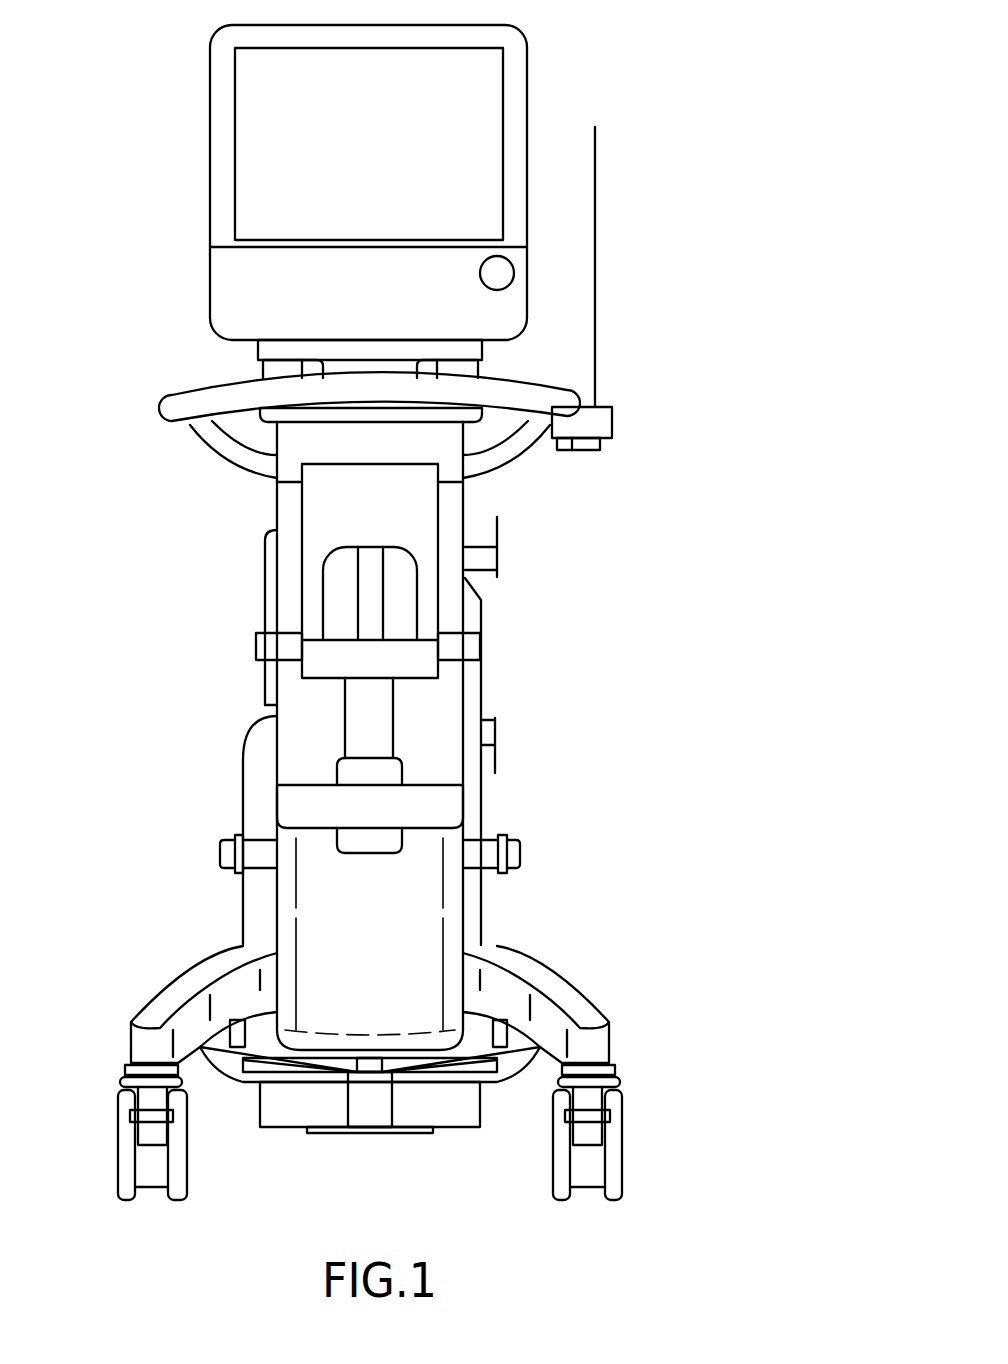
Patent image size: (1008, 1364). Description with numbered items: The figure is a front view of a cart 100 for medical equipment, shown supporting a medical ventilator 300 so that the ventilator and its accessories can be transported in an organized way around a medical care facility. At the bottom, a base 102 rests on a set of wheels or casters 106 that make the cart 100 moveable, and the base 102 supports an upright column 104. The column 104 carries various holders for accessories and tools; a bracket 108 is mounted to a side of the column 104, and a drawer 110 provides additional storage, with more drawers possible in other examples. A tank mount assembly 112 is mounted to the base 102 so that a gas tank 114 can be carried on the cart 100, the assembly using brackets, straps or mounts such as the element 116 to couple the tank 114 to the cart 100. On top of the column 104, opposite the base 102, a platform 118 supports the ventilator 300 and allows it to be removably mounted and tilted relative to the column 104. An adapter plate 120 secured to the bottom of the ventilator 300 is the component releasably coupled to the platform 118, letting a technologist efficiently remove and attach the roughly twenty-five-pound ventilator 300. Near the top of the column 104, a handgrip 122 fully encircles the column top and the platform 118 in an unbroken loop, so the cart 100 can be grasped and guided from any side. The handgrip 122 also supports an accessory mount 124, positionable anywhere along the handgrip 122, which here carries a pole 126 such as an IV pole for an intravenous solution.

The cart 100 is at (652, 637).
The base 102 is at (160, 1004).
The column 104 is at (310, 700).
The wheels or casters 106 is at (128, 1137).
The bracket 108 is at (485, 680).
The drawer 110 is at (393, 909).
The tank mount assembly 112 is at (267, 1075).
The gas tank 114 is at (260, 780).
The bracket, strap or mount 116 is at (263, 858).
The platform 118 is at (318, 422).
The adapter plate 120 is at (260, 348).
The handgrip 122 is at (203, 403).
The accessory mount 124 is at (603, 420).
The pole 126 is at (597, 215).
The medical ventilator 300 is at (545, 52).